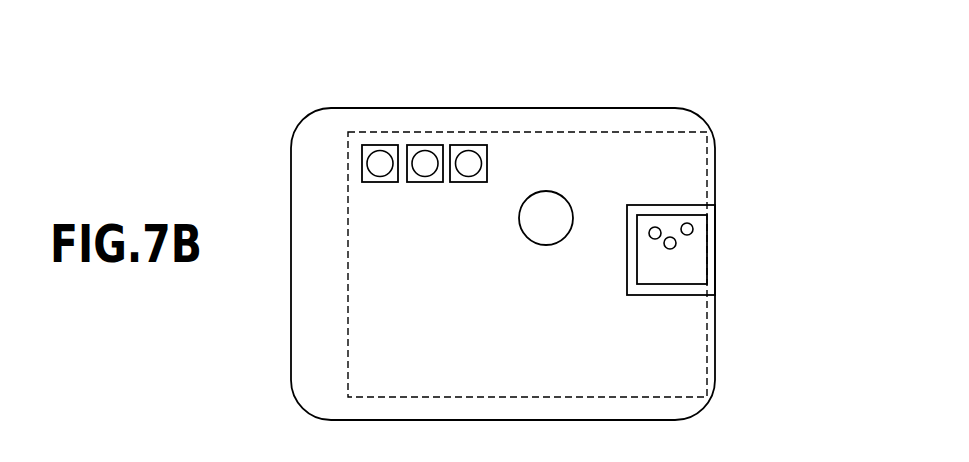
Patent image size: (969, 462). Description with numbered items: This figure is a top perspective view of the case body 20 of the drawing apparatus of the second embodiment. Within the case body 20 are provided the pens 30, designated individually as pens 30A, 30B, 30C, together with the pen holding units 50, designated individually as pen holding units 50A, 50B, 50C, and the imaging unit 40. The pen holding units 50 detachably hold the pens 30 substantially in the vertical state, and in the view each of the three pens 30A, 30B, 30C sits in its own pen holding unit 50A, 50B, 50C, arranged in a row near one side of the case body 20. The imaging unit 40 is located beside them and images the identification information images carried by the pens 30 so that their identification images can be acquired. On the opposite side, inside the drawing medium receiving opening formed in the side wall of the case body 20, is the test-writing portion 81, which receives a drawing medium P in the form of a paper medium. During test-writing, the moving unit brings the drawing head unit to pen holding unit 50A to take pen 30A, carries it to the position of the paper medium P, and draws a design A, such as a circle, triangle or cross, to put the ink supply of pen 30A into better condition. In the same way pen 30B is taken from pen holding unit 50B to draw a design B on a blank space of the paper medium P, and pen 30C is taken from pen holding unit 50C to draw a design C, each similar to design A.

The case body 20 is at (697, 95).
The pens 30 is at (412, 106).
The pen 30A is at (468, 145).
The pen 30B is at (425, 145).
The pen 30C is at (380, 145).
The pen holding units 50 is at (447, 234).
The pen holding unit 50A is at (468, 182).
The pen holding unit 50B is at (425, 182).
The pen holding unit 50C is at (383, 182).
The imaging unit 40 is at (555, 200).
The test-writing portion 81 is at (697, 289).
The drawing medium P is at (687, 262).
The design A is at (656, 226).
The design B is at (671, 236).
The design C is at (694, 229).